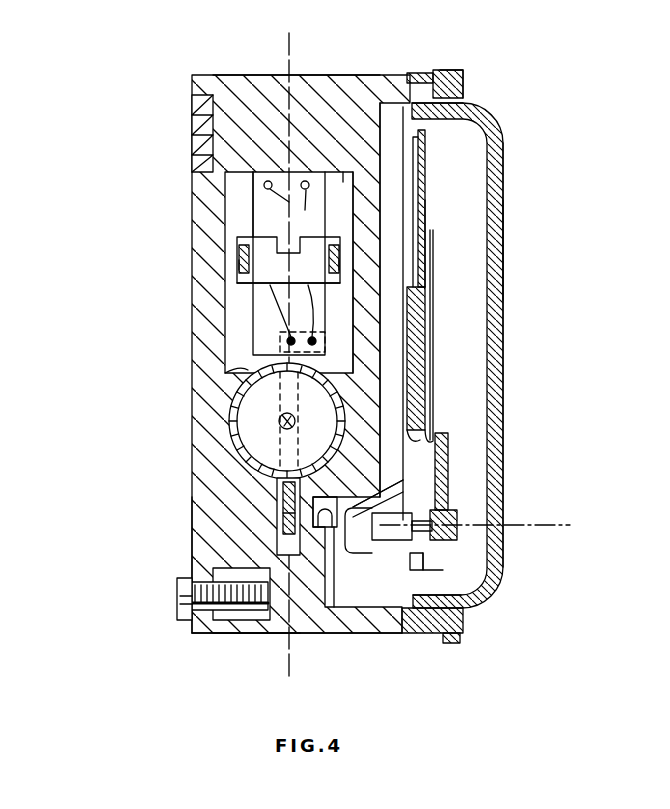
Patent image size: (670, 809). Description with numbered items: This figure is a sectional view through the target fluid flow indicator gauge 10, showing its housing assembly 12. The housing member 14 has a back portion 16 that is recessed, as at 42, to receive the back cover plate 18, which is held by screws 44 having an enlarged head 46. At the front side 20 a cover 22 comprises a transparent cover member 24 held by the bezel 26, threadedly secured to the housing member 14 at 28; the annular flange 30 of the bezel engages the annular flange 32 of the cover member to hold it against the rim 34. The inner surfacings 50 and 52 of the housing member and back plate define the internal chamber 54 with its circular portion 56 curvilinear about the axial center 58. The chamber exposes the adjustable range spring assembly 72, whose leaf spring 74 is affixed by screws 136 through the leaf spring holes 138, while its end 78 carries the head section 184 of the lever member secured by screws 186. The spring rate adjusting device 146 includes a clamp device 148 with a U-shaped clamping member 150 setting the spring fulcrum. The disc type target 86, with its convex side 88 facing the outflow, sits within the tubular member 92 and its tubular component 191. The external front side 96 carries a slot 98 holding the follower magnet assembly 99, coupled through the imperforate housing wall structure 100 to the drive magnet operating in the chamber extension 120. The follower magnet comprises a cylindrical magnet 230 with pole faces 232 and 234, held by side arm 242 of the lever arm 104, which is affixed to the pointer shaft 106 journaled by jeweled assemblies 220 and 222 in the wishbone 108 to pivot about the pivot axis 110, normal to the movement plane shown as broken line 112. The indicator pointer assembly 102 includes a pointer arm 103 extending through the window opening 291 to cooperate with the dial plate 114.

The target fluid flow indicator gauge 10 is at (538, 116).
The housing assembly 12 is at (190, 73).
The housing member 14 is at (307, 76).
The base or back portion 16 is at (208, 75).
The back cover plate 18 is at (192, 190).
The front side 20 is at (393, 77).
The cover 22 is at (479, 69).
The cover member 24 is at (503, 178).
The annular clamp member or bezel 26 is at (456, 70).
The threaded securement location 28 is at (433, 73).
The annular flange of bezel 30 is at (463, 100).
The annular flange of cover member 32 is at (425, 97).
The rim 34 is at (497, 575).
The recess 42 is at (193, 133).
The screws 44 is at (168, 611).
The enlarged head 46 is at (172, 582).
The inner surfacing of housing member 50 is at (343, 180).
The inner surfacing of back plate 52 is at (237, 288).
The internal chamber 54 is at (240, 354).
The curvilinear or circular portion 56 is at (247, 453).
The axial center 58 is at (279, 418).
The adjustable range spring assembly 72 is at (240, 210).
The leaf spring 74 is at (257, 222).
The end of leaf spring 78 is at (282, 336).
The disc type target 86 is at (265, 393).
The convex side 88 is at (248, 430).
The tubular member 92 is at (275, 500).
The external front side 96 is at (381, 203).
The slot or recess 98 is at (378, 481).
The follower magnet assembly 99 is at (340, 540).
The imperforate housing wall structure 100 is at (262, 513).
The indicator pointer assembly 102 is at (442, 376).
The pointer arm 103 is at (433, 283).
The lever arm 104 is at (383, 490).
The pointer shaft 106 is at (400, 573).
The wishbone 108 is at (447, 433).
The pivot axis 110 is at (555, 525).
The broken line 112 is at (285, 657).
The dial plate 114 is at (427, 213).
The extension of chamber 120 is at (274, 540).
The screws 136 is at (309, 212).
The leaf spring holes 138 is at (306, 180).
The spring rate adjusting device 146 is at (226, 267).
The clamp device 148 is at (237, 260).
The U-shaped clamping member 150 is at (240, 248).
The head section 184 is at (315, 270).
The screws 186 is at (261, 270).
The tubular component 191 is at (225, 376).
The jeweled assembly 220 is at (447, 507).
The jeweled assembly 222 is at (356, 555).
The cylindrical magnet 230 is at (323, 530).
The pole face 232 is at (266, 633).
The pole face 234 is at (442, 470).
The side arm 242 is at (461, 443).
The window opening 291 is at (430, 413).